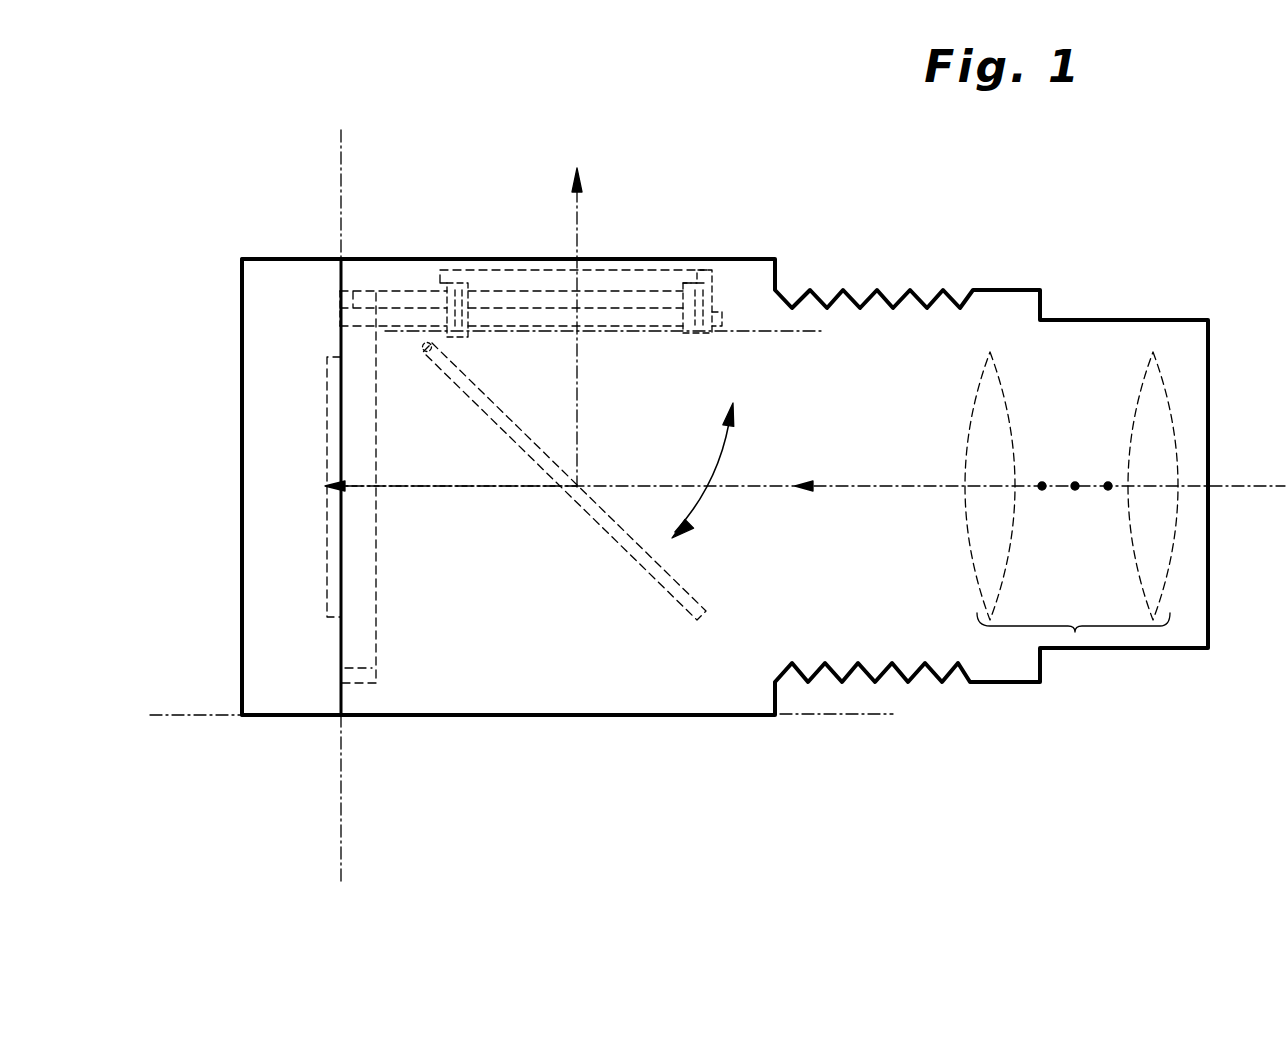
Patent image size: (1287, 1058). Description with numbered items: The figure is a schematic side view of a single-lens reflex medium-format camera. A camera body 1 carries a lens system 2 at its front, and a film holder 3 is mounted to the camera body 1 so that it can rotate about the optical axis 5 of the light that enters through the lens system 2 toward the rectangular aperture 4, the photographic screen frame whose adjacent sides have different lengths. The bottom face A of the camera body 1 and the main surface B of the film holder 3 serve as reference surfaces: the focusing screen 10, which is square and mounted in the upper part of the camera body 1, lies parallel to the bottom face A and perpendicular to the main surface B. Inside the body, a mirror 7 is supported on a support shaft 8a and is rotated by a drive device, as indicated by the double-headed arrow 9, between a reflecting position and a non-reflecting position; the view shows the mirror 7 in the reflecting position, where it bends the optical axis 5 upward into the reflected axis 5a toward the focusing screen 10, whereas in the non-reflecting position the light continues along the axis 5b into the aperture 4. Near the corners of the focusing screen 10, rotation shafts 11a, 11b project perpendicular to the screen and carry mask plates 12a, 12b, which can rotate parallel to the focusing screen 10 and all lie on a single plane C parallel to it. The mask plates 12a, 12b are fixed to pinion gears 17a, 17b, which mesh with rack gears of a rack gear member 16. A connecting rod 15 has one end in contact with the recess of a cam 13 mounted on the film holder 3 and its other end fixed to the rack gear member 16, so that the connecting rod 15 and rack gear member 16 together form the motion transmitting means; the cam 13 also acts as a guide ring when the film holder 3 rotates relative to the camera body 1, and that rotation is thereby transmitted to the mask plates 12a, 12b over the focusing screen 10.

The camera body 1 is at (742, 716).
The lens system 2 is at (1075, 632).
The film holder 3 is at (299, 722).
The rectangular aperture 4 is at (327, 565).
The optical axis 5 is at (826, 490).
The reflected optical axis 5a is at (578, 465).
The non-reflected optical axis 5b is at (518, 492).
The mirror 7 is at (648, 575).
The support shaft 8a is at (423, 353).
The double-headed arrow 9 is at (693, 500).
The focusing screen 10 is at (643, 262).
The rotation shaft 11a is at (707, 280).
The rotation shaft 11b is at (448, 277).
The mask plate 12a is at (658, 332).
The mask plate 12b is at (535, 338).
The cam 13 is at (372, 600).
The connecting rod 15 is at (400, 291).
The rack gear member 16 is at (530, 291).
The pinion gear 17a is at (715, 312).
The pinion gear 17b is at (448, 318).
The bottom face A is at (843, 715).
The main surface B is at (342, 858).
The plane C is at (783, 332).